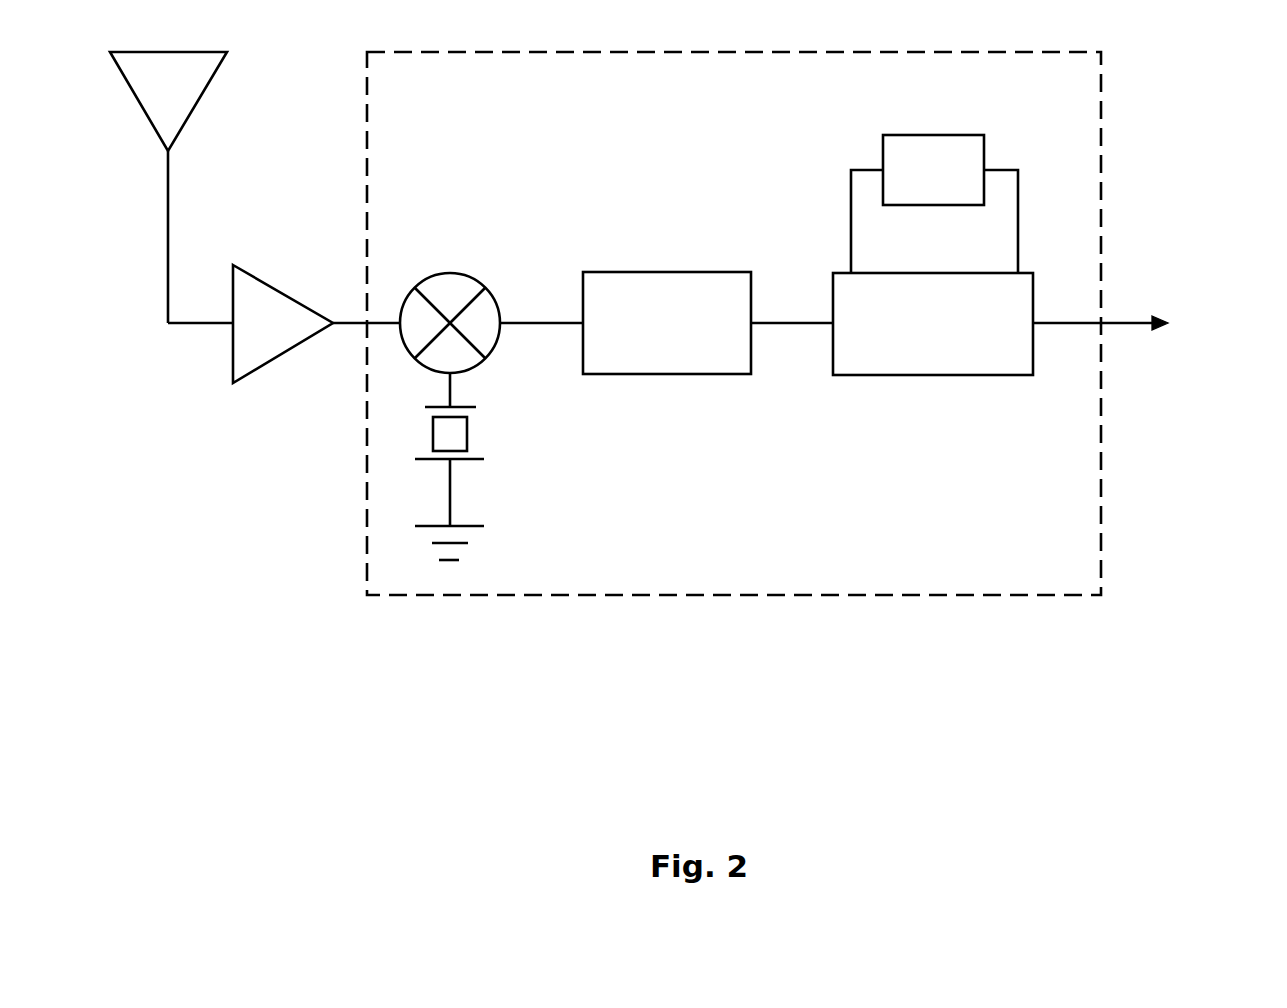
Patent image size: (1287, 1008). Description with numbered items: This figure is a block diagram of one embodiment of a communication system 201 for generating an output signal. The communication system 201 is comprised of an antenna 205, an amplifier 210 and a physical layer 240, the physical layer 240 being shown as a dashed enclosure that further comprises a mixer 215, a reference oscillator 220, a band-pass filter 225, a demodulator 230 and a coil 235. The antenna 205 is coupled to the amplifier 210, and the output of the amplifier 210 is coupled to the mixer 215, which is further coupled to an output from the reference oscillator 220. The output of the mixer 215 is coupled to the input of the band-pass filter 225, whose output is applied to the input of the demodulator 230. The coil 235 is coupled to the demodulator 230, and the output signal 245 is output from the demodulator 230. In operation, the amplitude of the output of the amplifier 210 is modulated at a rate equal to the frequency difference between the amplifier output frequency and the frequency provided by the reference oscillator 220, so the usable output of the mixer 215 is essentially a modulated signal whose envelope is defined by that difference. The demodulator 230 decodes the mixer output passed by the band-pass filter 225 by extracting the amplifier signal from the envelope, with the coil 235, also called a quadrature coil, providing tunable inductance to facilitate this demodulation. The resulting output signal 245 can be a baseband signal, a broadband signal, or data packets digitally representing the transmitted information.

The communication system 201 is at (673, 744).
The antenna 205 is at (217, 187).
The amplifier 210 is at (278, 356).
The mixer 215 is at (450, 285).
The reference oscillator 220 is at (506, 466).
The band-pass filter 225 is at (667, 323).
The demodulator 230 is at (933, 324).
The coil 235 is at (934, 204).
The physical layer 240 is at (1067, 118).
The output signal 245 is at (1150, 363).